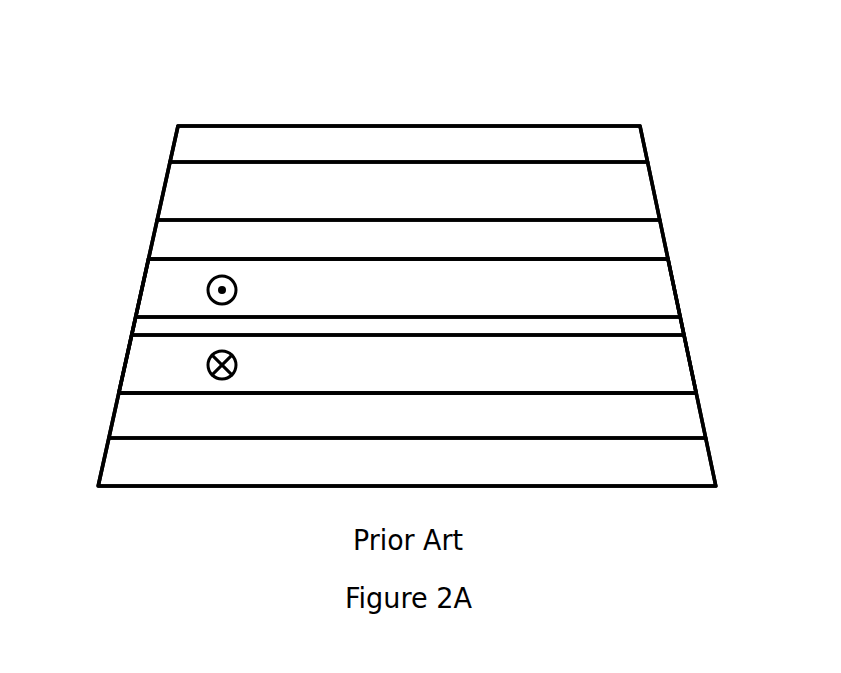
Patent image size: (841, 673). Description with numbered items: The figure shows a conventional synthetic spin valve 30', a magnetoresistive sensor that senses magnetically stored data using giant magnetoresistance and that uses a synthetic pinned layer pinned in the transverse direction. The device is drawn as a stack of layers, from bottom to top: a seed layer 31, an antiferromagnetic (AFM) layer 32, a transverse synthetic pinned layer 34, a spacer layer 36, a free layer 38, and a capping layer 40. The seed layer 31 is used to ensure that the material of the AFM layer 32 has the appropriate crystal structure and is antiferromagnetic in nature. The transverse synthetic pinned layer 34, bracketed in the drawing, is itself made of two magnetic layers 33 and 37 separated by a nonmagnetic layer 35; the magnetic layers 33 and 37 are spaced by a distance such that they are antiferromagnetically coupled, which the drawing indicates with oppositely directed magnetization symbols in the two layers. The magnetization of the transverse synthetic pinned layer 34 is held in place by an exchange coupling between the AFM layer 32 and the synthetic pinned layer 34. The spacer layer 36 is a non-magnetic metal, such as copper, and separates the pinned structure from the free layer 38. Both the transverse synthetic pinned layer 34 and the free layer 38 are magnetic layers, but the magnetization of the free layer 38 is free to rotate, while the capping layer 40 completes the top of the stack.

The synthetic spin valve 30' is at (407, 249).
The capping layer 40 is at (485, 125).
The free layer 38 is at (655, 192).
The spacer layer 36 is at (152, 240).
The magnetic layer 37 is at (138, 297).
The nonmagnetic layer 35 is at (135, 328).
The magnetic layer 33 is at (127, 352).
The transverse synthetic pinned layer 34 is at (715, 258).
The antiferromagnetic (AFM) layer 32 is at (117, 405).
The seed layer 31 is at (580, 488).